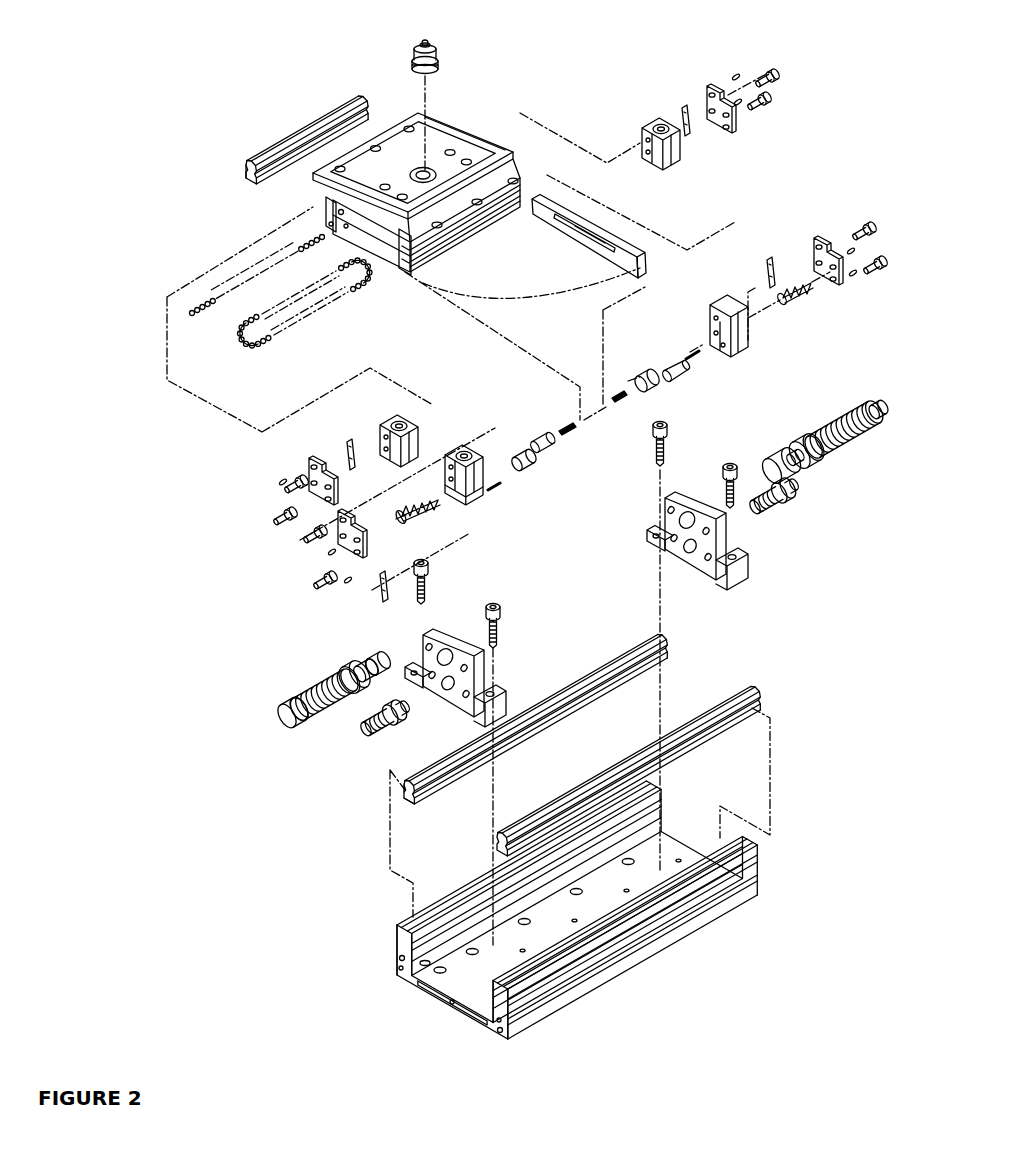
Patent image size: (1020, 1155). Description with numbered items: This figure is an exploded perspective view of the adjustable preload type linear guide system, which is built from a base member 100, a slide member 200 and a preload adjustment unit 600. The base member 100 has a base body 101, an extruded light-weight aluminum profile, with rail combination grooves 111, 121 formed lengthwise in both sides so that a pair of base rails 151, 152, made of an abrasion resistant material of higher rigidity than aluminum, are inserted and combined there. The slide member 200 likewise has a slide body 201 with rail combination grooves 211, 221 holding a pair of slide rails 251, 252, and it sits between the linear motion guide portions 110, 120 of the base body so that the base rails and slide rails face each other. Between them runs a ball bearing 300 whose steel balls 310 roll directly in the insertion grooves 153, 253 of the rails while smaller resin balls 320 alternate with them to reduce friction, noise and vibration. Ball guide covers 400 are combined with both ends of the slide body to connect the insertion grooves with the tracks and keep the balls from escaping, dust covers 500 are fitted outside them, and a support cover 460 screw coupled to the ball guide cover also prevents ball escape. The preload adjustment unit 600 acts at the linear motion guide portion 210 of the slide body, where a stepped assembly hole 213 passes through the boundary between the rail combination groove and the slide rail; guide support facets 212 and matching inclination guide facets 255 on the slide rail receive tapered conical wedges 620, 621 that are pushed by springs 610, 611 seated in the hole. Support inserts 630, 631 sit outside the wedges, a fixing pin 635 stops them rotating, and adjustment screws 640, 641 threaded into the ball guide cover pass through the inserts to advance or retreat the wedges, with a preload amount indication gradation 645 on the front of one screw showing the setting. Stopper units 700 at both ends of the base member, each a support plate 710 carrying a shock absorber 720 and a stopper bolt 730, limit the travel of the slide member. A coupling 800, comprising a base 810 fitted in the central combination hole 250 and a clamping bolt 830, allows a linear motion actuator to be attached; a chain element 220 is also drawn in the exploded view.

The base member 100 is at (662, 979).
The base body 101 is at (448, 1002).
The linear motion guide portion 110 is at (517, 1015).
The rail combination groove 111 is at (508, 1040).
The linear motion guide portion 120 is at (395, 940).
The rail combination groove 121 is at (396, 958).
The base rail 151 is at (705, 746).
The base rail 152 is at (568, 688).
The insertion groove 153 is at (413, 798).
The slide member 200 is at (393, 114).
The slide body 201 is at (497, 128).
The linear motion guide portion 210 is at (398, 270).
The rail combination groove 211 is at (498, 238).
The guide support facet 212 is at (448, 262).
The stepped assembly hole 213 is at (410, 283).
The ball chain 220 is at (318, 240).
The rail combination groove 221 is at (328, 212).
The central combination hole 250 is at (425, 170).
The slide rail 251 is at (610, 235).
The slide rail 252 is at (300, 130).
The insertion groove 253 is at (248, 168).
The inclination guide facet 255 is at (645, 262).
The ball bearing 300 is at (322, 327).
The steel ball 310 is at (262, 345).
The resin ball 320 is at (248, 348).
The ball guide cover 400 is at (648, 122).
The support cover 460 is at (683, 108).
The dust cover 500 is at (720, 90).
The preload adjustment unit 600 is at (645, 404).
The spring 610 is at (578, 432).
The spring 611 is at (617, 388).
The conical wedge 620 is at (548, 447).
The conical wedge 621 is at (672, 372).
The support insert 630 is at (521, 450).
The support insert 631 is at (648, 372).
The fixing pin 635 is at (700, 352).
The adjustment screw 640 is at (430, 510).
The adjustment screw 641 is at (800, 298).
The preload amount indication gradation 645 is at (405, 518).
The stopper unit 700 is at (775, 550).
The support plate 710 is at (705, 575).
The shock absorber 720 is at (845, 448).
The stopper bolt 730 is at (790, 498).
The coupling 800 is at (452, 46).
The base 810 is at (418, 58).
The clamping bolt 830 is at (424, 42).